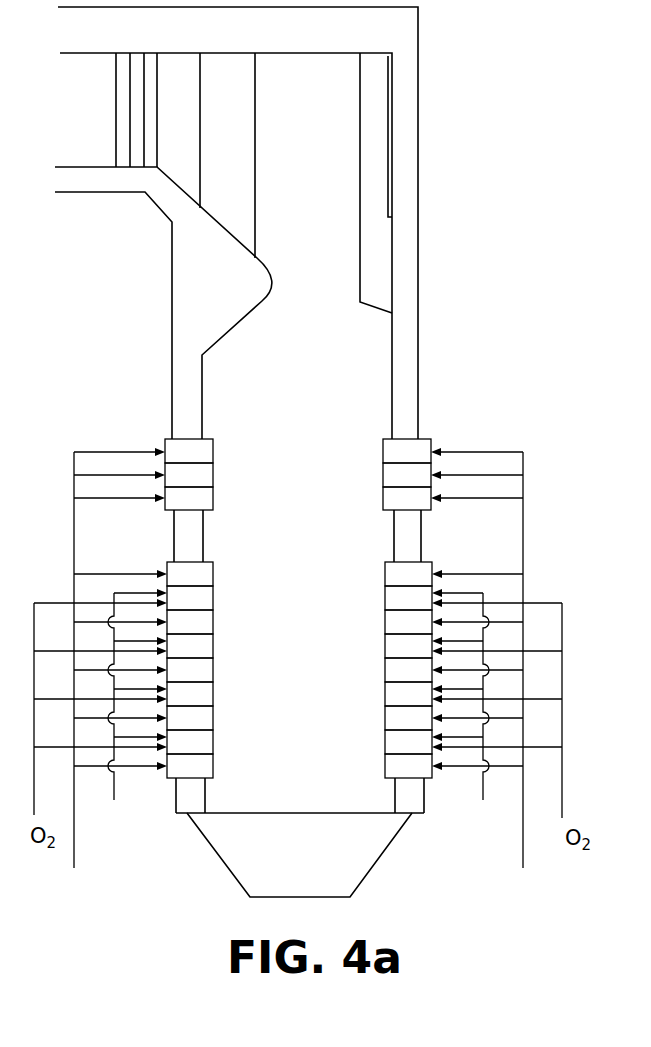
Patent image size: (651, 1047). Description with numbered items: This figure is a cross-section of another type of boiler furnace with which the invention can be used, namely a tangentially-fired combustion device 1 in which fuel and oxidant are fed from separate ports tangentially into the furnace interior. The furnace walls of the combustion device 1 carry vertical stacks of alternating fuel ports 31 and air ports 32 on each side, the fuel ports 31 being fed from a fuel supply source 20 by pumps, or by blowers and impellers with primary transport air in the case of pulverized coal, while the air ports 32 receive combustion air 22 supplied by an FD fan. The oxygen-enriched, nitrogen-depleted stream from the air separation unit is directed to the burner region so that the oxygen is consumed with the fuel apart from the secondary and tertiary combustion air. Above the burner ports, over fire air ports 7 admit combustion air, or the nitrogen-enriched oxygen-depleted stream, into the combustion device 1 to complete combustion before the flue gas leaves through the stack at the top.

The combustion device 1 is at (428, 145).
The over fire air port 7 is at (213, 473).
The supply source 20 is at (303, 709).
The combustion air 22 is at (304, 673).
The fuel nozzles 31 is at (213, 595).
The line 32 is at (213, 568).